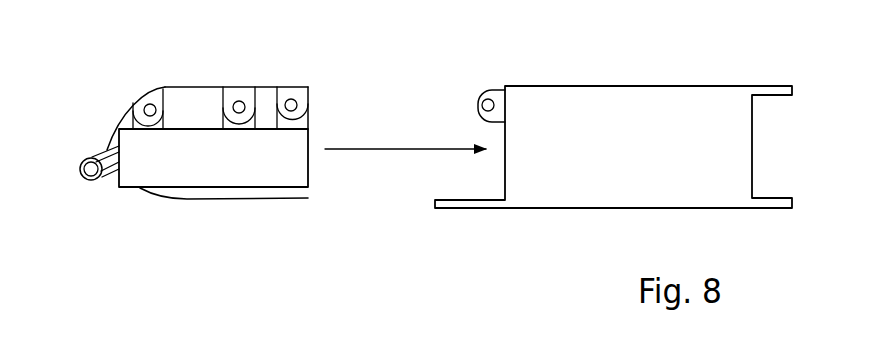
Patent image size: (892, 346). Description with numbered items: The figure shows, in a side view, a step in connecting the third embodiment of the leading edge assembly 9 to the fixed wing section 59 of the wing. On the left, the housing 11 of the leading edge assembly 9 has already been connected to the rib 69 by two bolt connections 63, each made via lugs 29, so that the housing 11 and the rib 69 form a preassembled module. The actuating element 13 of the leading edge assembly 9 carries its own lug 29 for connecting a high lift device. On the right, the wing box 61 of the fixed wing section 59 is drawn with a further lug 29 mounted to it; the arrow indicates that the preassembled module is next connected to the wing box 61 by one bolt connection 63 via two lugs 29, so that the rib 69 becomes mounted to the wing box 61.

The leading edge assembly 9 is at (314, 213).
The housing 11 is at (213, 173).
The actuating element 13 is at (105, 155).
The lug 29 is at (292, 89).
The fixed wing section 59 is at (590, 199).
The wing box 61 is at (632, 98).
The bolt connection 63 is at (152, 80).
The rib 69 is at (205, 97).